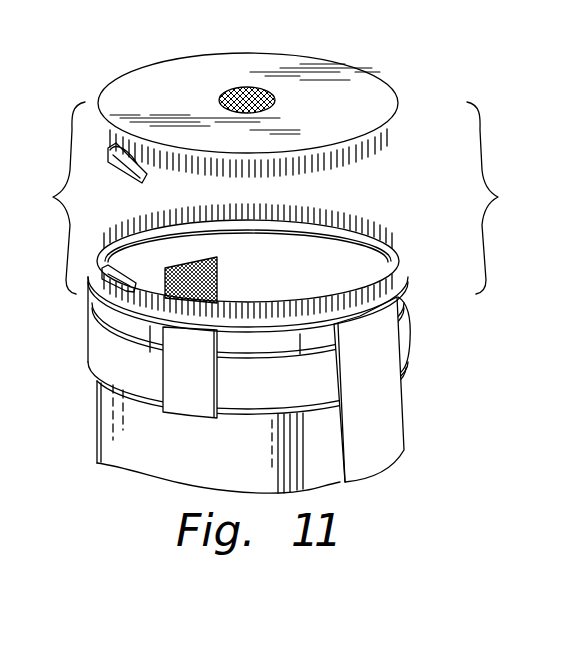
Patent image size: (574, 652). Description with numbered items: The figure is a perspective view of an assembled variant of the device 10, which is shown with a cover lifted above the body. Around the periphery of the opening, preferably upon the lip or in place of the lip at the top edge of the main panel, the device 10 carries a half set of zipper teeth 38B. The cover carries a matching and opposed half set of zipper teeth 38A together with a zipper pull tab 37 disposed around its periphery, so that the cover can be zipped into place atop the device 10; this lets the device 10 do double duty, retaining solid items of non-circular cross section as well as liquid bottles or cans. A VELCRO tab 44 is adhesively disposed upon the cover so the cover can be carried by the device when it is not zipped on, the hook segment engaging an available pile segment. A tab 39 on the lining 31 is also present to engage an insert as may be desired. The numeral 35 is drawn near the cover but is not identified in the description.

The device 10 is at (275, 290).
The lining 31 is at (276, 334).
The lid disc 35 is at (269, 120).
The zipper pull tab 37 is at (123, 183).
The ½ set of zipper teeth 38A is at (366, 167).
The ½ set of zipper teeth 38B is at (357, 228).
The tab 39 is at (219, 268).
The VELCRO tab 44 is at (270, 92).